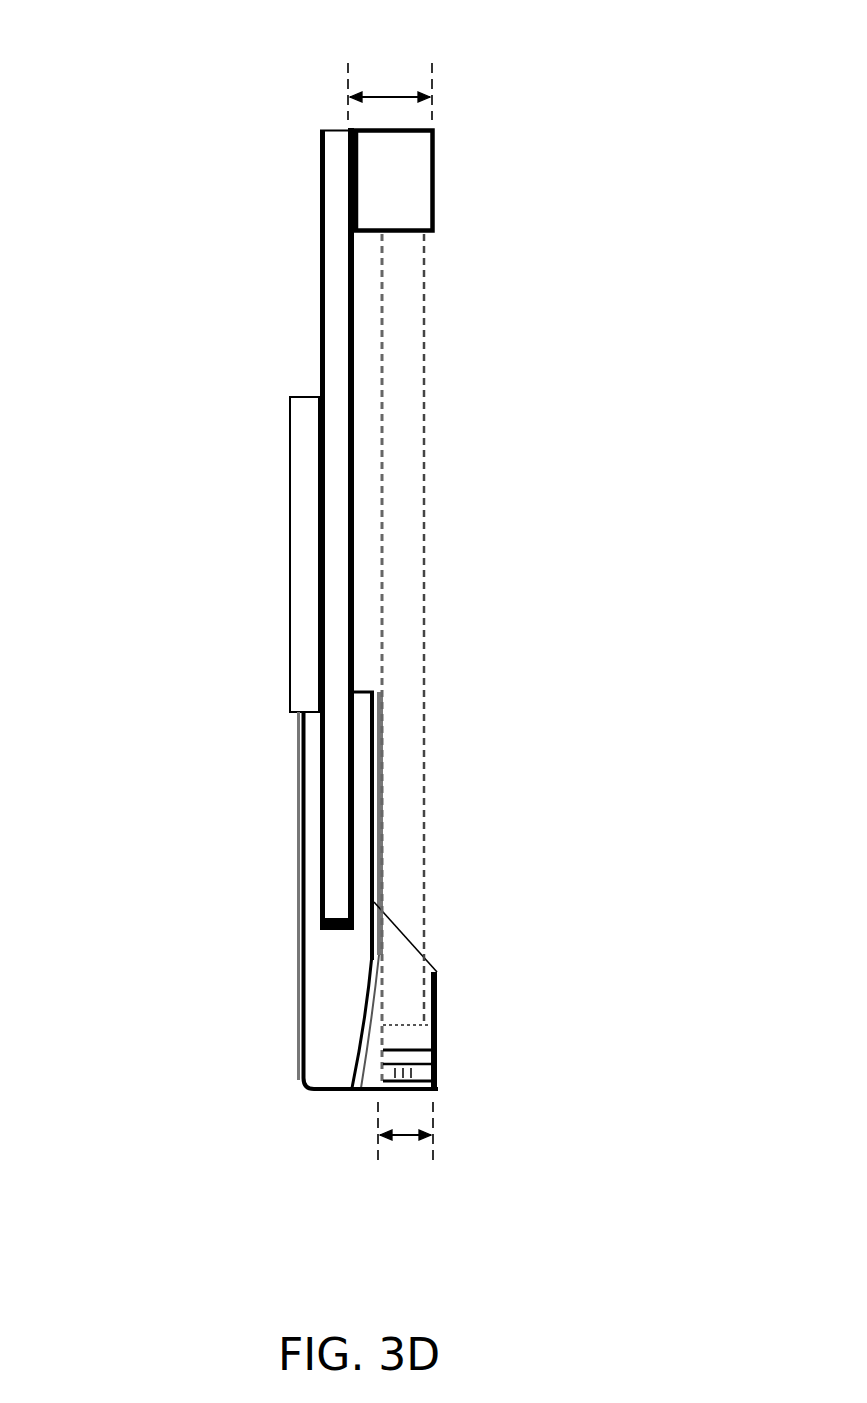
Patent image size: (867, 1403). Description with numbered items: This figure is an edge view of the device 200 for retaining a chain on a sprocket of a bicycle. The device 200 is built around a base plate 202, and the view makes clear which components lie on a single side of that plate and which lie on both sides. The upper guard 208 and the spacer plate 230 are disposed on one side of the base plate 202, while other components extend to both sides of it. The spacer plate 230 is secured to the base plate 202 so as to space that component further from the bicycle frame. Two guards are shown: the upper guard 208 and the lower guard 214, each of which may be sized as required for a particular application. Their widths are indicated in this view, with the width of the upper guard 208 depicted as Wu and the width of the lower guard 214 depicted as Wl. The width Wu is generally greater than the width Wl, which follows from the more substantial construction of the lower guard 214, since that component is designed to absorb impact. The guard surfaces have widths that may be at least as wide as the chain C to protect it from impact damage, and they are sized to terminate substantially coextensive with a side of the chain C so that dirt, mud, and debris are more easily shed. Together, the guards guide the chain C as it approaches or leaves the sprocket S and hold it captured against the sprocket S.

The device 200 is at (386, 600).
The base plate 202 is at (330, 368).
The upper guard 208 is at (407, 182).
The lower guard 214 is at (313, 1010).
The spacer plate 230 is at (297, 536).
The sprocket S is at (412, 503).
The chain C is at (409, 998).
The width of the upper guard Wu is at (388, 90).
The width of the lower guard Wl is at (405, 1140).